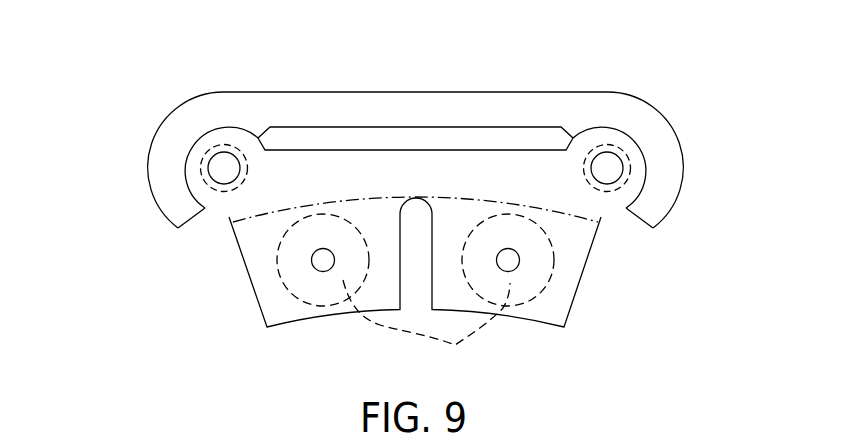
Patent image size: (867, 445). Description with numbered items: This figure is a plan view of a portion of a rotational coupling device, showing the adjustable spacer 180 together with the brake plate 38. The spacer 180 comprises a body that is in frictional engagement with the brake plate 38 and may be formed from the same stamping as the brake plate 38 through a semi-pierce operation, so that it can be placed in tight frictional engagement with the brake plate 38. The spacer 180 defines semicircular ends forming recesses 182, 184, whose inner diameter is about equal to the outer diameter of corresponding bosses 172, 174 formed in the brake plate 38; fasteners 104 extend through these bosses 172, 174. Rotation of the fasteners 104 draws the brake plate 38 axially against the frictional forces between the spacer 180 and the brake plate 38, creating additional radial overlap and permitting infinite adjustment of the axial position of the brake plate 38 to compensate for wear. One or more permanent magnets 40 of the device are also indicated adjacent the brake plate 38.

The adjustable spacer 180 is at (181, 101).
The fasteners 104 is at (225, 163).
The recess 182 is at (185, 148).
The recess 184 is at (645, 152).
The boss 172 is at (222, 198).
The boss 174 is at (614, 197).
The brake plate 38 is at (547, 305).
The permanent magnets 40 is at (455, 345).